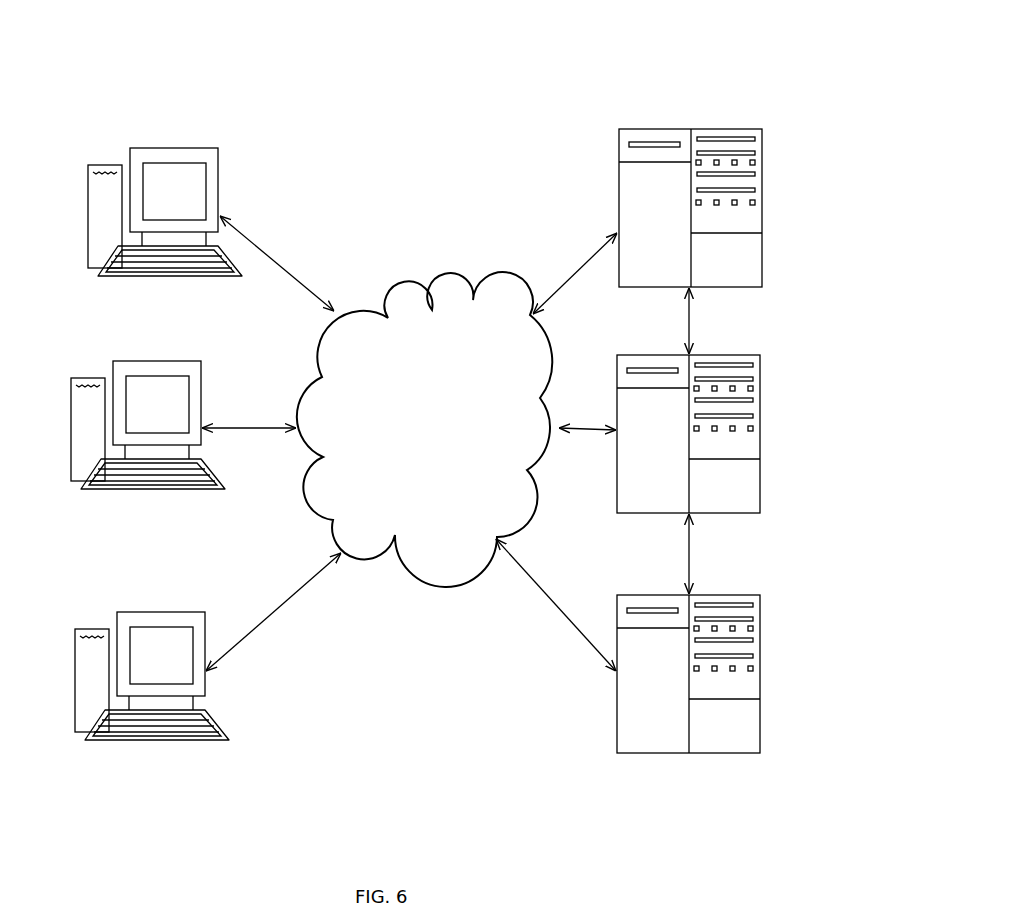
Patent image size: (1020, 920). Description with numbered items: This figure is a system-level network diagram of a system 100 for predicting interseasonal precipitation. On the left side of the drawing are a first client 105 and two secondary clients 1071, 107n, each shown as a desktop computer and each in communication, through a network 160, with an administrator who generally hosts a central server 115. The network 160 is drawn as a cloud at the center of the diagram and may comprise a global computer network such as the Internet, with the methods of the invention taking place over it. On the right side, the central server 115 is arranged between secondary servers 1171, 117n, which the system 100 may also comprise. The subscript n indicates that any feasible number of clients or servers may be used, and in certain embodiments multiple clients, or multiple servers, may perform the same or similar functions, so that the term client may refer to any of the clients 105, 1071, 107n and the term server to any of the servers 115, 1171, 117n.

The system 100 is at (639, 36).
The first client 105 is at (176, 212).
The secondary client 1071 is at (162, 425).
The secondary client 107n is at (165, 676).
The central server 115 is at (668, 434).
The secondary server 1171 is at (668, 208).
The secondary server 117n is at (666, 672).
The network 160 is at (438, 413).